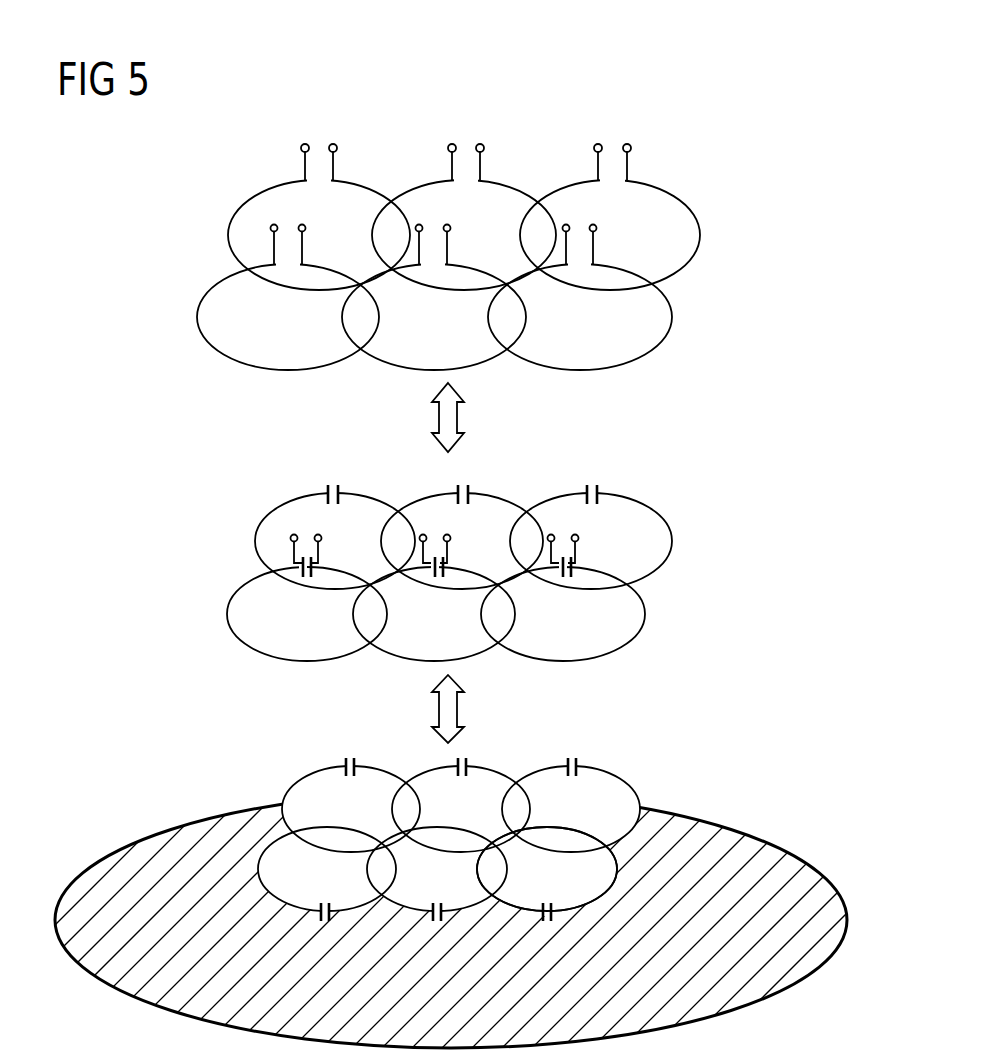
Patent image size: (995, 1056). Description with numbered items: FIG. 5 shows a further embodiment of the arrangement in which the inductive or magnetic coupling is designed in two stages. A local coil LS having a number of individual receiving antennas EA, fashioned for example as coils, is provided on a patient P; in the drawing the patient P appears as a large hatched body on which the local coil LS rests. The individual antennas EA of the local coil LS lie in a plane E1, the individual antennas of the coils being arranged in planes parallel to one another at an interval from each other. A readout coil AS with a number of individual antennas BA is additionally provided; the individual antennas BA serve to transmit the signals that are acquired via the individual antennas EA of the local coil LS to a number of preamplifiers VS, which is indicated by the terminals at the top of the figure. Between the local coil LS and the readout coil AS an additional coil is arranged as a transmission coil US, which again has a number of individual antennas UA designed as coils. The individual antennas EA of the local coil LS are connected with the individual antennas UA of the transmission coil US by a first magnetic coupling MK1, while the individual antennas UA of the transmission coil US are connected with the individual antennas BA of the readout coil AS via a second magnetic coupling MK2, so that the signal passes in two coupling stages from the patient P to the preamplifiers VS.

The preamplifiers VS is at (466, 115).
The readout coil AS is at (170, 225).
The individual antennas of the readout coil BA is at (448, 261).
The second magnetic coupling MK2 is at (486, 417).
The transmission coil US is at (212, 540).
The individual antennas of the transmission coil UA is at (449, 573).
The first magnetic coupling MK1 is at (485, 709).
The local coil LS is at (431, 839).
The individual receiving antennas EA is at (449, 839).
The plane E1 is at (574, 869).
The patient P is at (796, 838).